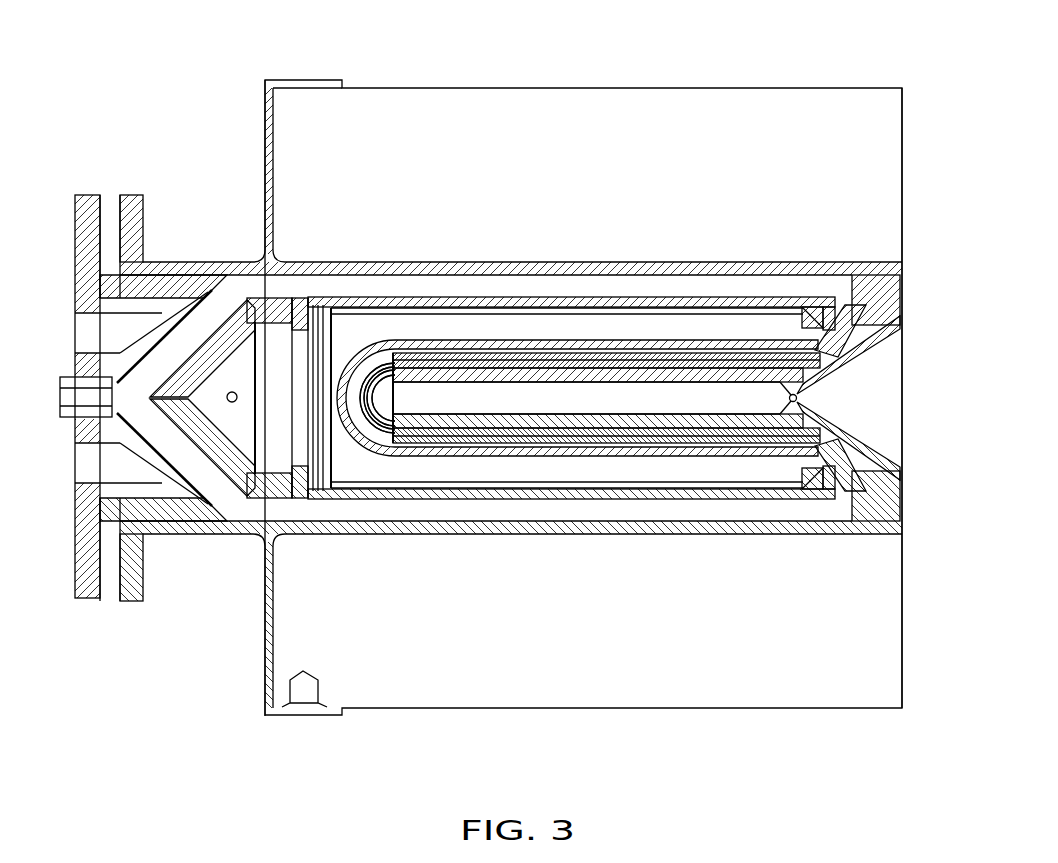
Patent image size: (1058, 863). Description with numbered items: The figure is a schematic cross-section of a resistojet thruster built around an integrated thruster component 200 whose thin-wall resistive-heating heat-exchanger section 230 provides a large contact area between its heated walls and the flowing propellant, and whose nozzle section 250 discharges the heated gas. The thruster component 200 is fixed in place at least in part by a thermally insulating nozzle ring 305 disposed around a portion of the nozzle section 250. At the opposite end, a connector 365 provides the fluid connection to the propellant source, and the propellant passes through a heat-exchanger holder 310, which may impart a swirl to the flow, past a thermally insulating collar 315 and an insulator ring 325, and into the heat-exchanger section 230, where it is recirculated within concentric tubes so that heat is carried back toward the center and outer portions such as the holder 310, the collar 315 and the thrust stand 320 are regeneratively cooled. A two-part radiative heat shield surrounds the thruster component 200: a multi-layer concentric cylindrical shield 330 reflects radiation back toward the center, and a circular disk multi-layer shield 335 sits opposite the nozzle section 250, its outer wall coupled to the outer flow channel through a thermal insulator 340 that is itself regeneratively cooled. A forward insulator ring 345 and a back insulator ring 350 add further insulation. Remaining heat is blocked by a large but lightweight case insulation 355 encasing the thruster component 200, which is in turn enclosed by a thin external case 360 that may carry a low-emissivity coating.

The integrated thruster component 200 is at (912, 372).
The heat-exchanger section 230 is at (565, 425).
The nozzle section 250 is at (878, 410).
The nozzle ring 305 is at (880, 290).
The heat-exchanger holder 310 is at (80, 200).
The collar 315 is at (110, 200).
The thrust stand 320 is at (135, 210).
The insulator ring 325 is at (205, 285).
The multi-layer concentric cylindrical shield 330 is at (660, 468).
The circular disk multi-layer shield 335 is at (310, 480).
The thermal insulator 340 is at (745, 490).
The forward insulator ring 345 is at (810, 485).
The back insulator ring 350 is at (285, 493).
The case insulation 355 is at (415, 115).
The external case 360 is at (575, 88).
The connector 365 is at (90, 425).